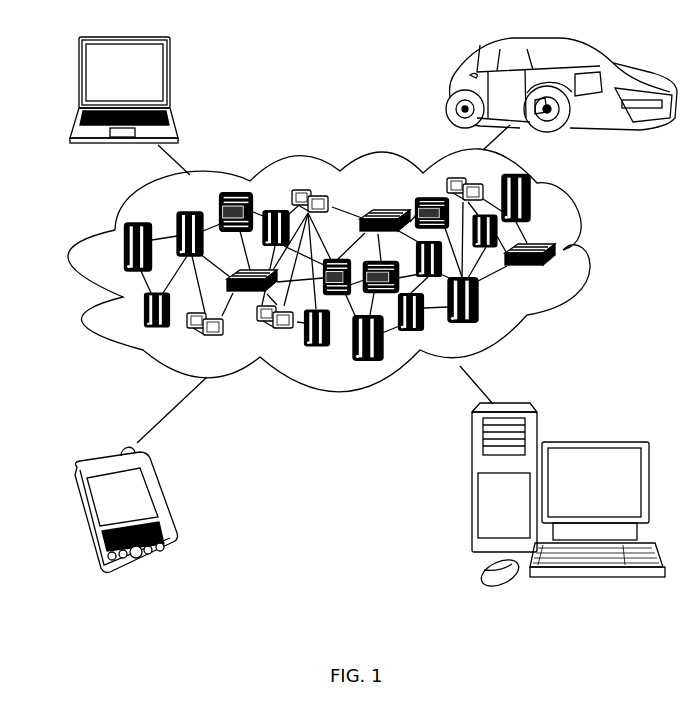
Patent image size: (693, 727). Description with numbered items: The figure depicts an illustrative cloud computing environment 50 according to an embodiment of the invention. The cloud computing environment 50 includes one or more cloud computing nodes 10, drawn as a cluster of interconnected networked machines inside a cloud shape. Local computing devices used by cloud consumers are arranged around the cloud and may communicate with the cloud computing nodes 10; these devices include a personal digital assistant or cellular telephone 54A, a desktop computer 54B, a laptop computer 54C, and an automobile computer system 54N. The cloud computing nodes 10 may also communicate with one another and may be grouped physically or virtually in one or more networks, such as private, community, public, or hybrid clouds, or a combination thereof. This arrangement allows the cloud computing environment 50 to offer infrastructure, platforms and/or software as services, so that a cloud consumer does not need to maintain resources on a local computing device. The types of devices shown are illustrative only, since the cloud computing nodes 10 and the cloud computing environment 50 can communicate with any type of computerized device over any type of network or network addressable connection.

The cloud computing nodes 10 is at (563, 273).
The cloud computing environment 50 is at (594, 256).
The personal digital assistant (PDA) or cellular telephone 54A is at (163, 503).
The desktop computer 54B is at (595, 442).
The laptop computer 54C is at (170, 77).
The automobile computer system 54N is at (452, 90).